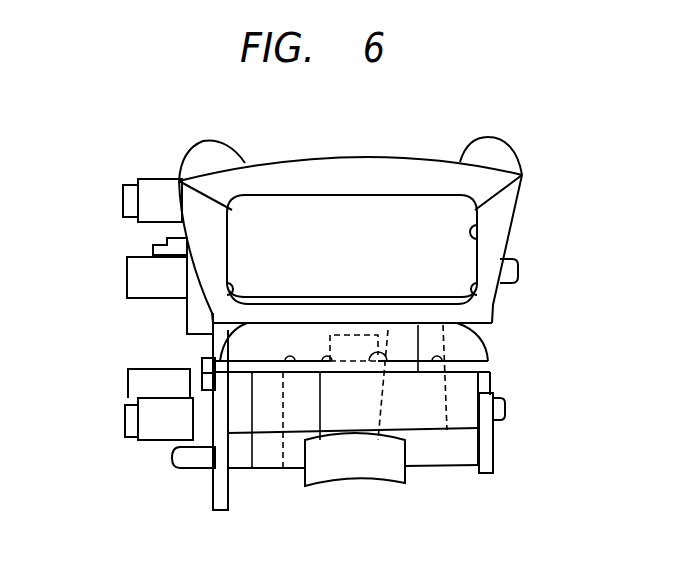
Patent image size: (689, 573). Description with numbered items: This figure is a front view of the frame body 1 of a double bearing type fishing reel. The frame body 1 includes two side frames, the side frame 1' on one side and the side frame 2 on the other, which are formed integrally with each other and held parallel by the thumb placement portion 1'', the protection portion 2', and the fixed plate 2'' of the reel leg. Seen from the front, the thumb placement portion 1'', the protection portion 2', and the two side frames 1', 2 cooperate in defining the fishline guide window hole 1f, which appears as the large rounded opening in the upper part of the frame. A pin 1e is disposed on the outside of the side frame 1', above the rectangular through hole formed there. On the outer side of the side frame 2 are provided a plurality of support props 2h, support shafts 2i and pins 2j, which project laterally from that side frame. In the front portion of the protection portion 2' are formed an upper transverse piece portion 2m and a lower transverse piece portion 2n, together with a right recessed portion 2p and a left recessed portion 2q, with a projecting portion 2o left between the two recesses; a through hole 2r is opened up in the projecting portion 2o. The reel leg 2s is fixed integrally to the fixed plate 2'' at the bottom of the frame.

The frame body 1 is at (379, 205).
The side frame 1' is at (532, 433).
The thumb placement portion 1'' is at (350, 134).
The pin 1e is at (519, 269).
The fishline guide window hole 1f is at (478, 228).
The side frame 2 is at (315, 412).
The protection portion 2' is at (390, 341).
The fixed plate 2'' is at (324, 520).
The support props 2h is at (128, 381).
The support shafts 2i is at (125, 420).
The pins 2j is at (173, 458).
The upper transverse piece portion 2m is at (418, 372).
The lower transverse piece portion 2n is at (252, 468).
The projecting portion 2o is at (320, 440).
The right recessed portion 2p is at (447, 430).
The left recessed portion 2q is at (283, 468).
The through hole 2r is at (378, 440).
The reel leg 2s is at (348, 485).